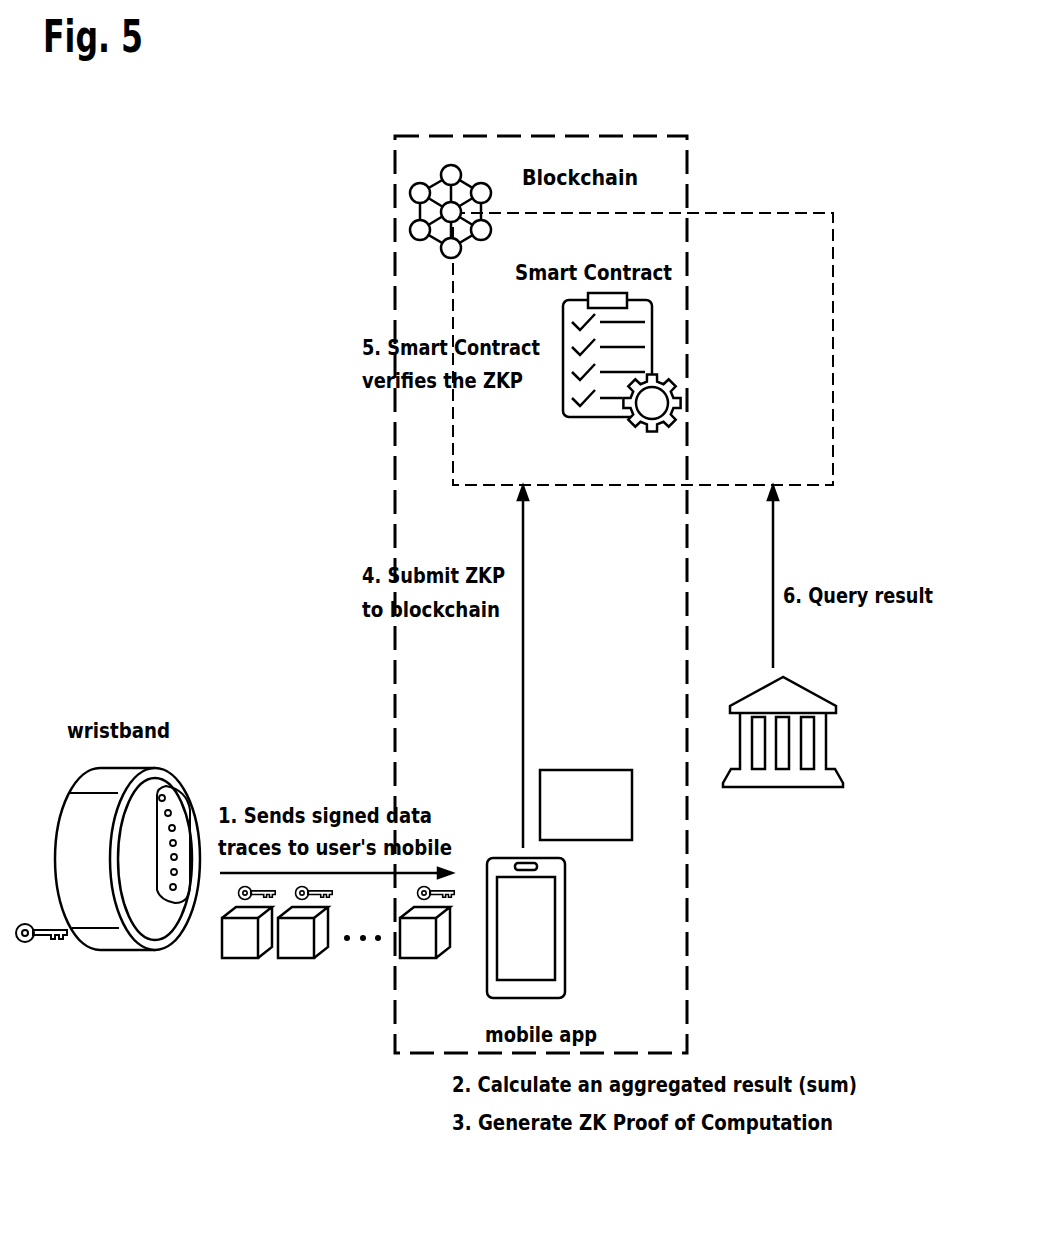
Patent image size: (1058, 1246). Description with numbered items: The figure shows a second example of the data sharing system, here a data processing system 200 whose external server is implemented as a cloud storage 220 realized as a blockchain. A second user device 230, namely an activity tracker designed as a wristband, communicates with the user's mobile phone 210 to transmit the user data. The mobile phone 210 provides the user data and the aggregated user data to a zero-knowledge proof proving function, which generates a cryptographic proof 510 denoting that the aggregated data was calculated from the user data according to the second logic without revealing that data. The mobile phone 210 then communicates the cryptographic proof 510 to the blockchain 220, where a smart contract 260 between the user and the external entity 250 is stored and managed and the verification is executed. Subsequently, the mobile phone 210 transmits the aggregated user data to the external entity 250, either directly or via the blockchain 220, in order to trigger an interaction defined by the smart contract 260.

The data processing system 200 is at (543, 133).
The cloud storage 220 is at (459, 205).
The smart contract 260 is at (653, 337).
The cryptographic proof 510 is at (587, 768).
The mobile phone 210 is at (567, 927).
The external entity 250 is at (836, 741).
The second user device 230 is at (118, 950).